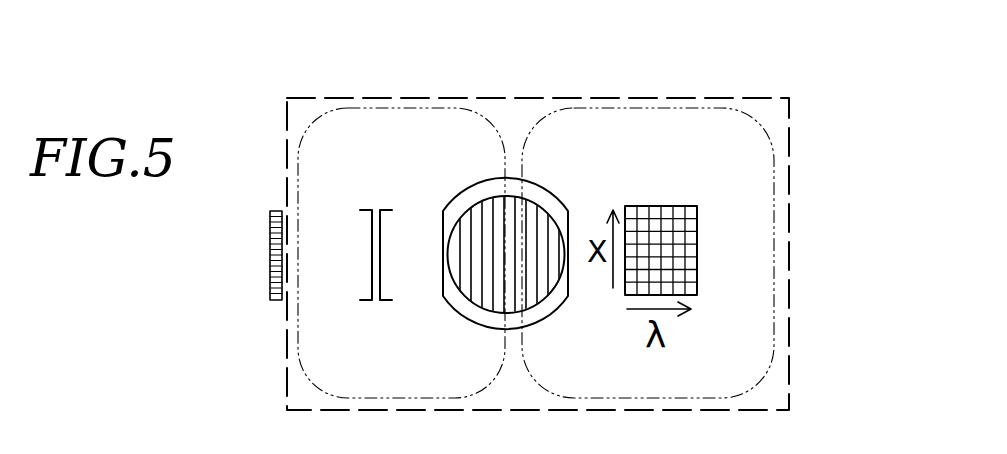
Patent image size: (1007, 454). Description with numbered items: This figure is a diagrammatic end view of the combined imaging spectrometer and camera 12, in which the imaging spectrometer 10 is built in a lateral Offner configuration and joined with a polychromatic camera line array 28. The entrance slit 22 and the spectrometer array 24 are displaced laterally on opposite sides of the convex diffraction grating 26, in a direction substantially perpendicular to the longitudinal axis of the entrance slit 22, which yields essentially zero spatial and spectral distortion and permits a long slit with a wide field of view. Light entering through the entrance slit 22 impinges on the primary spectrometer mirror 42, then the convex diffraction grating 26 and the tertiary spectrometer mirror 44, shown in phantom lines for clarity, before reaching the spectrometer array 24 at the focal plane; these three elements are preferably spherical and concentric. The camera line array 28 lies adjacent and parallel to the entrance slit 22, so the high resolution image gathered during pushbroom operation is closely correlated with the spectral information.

The imaging spectrometer 10 is at (790, 273).
The combined imaging spectrometer and camera 12 is at (597, 53).
The entrance slit 22 is at (370, 282).
The spectrometer array 24 is at (678, 206).
The convex diffraction grating 26 is at (547, 187).
The polychromatic camera line array 28 is at (270, 270).
The primary spectrometer mirror 42 is at (392, 108).
The tertiary spectrometer mirror 44 is at (774, 198).